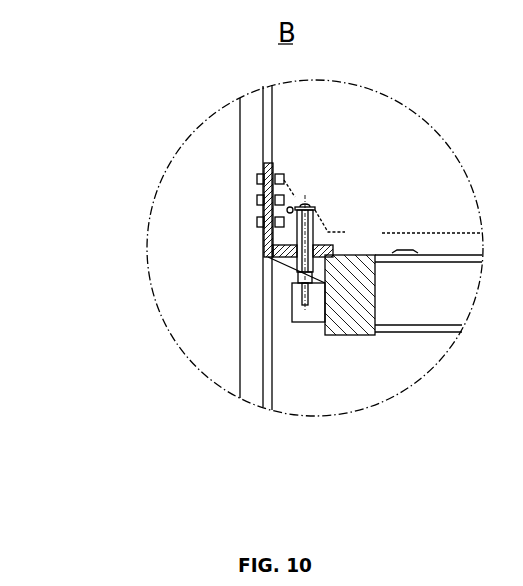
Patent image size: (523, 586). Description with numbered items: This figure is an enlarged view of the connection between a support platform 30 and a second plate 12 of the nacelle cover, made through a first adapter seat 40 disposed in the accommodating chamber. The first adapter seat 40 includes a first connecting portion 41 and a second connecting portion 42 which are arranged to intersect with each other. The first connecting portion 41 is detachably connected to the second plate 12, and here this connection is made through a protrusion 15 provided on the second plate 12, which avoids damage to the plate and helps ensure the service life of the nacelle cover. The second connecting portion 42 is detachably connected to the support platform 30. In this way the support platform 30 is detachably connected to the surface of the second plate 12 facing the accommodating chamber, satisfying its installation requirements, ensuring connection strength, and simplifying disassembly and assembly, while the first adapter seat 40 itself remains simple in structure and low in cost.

The second plate 12 is at (268, 400).
The protrusion 15 is at (266, 137).
The support platform 30 is at (370, 337).
The first adapter seat 40 is at (186, 265).
The first connecting portion 41 is at (261, 210).
The second connecting portion 42 is at (298, 254).